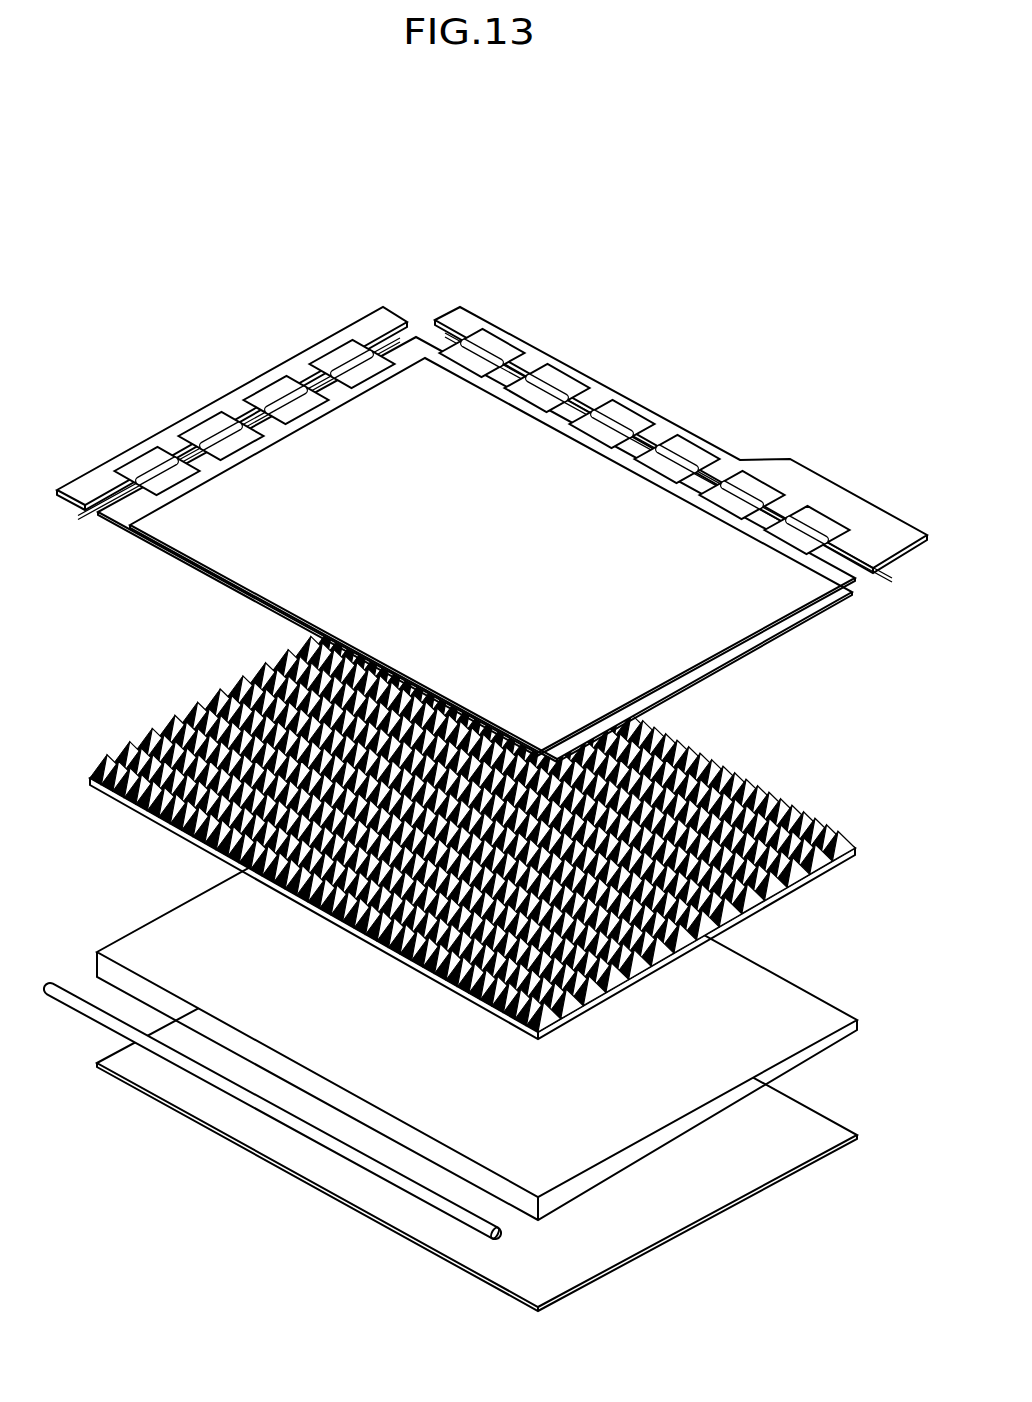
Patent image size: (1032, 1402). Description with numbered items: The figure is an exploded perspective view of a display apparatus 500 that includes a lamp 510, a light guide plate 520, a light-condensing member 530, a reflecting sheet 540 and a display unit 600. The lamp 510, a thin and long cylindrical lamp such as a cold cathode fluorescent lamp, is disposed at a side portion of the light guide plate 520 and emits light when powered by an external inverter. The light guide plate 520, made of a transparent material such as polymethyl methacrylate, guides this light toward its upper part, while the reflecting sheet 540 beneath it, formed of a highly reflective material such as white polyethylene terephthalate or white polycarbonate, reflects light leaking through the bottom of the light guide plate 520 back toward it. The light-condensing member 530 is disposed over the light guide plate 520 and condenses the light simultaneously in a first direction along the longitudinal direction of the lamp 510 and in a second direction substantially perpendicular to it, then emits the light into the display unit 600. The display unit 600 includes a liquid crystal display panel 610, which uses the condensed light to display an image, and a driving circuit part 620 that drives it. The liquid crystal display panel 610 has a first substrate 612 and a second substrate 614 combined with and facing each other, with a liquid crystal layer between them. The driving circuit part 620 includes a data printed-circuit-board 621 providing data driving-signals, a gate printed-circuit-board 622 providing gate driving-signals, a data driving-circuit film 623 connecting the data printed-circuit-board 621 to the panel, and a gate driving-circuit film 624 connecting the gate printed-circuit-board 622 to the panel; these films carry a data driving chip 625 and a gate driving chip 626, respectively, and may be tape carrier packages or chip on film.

The display apparatus 500 is at (474, 247).
The lamp 510 is at (118, 1023).
The light guide plate 520 is at (130, 916).
The light-condensing member 530 is at (132, 711).
The reflecting sheet 540 is at (180, 1097).
The display unit 600 is at (165, 356).
The liquid crystal display panel 610 is at (108, 598).
The first substrate 612 is at (125, 513).
The second substrate 614 is at (188, 537).
The driving circuit part 620 is at (556, 349).
The data printed-circuit-board 621 is at (787, 473).
The gate printed-circuit-board 622 is at (367, 327).
The data driving-circuit film 623 is at (636, 423).
The gate driving-circuit film 624 is at (340, 355).
The data driving chip 625 is at (598, 415).
The gate driving chip 626 is at (280, 387).